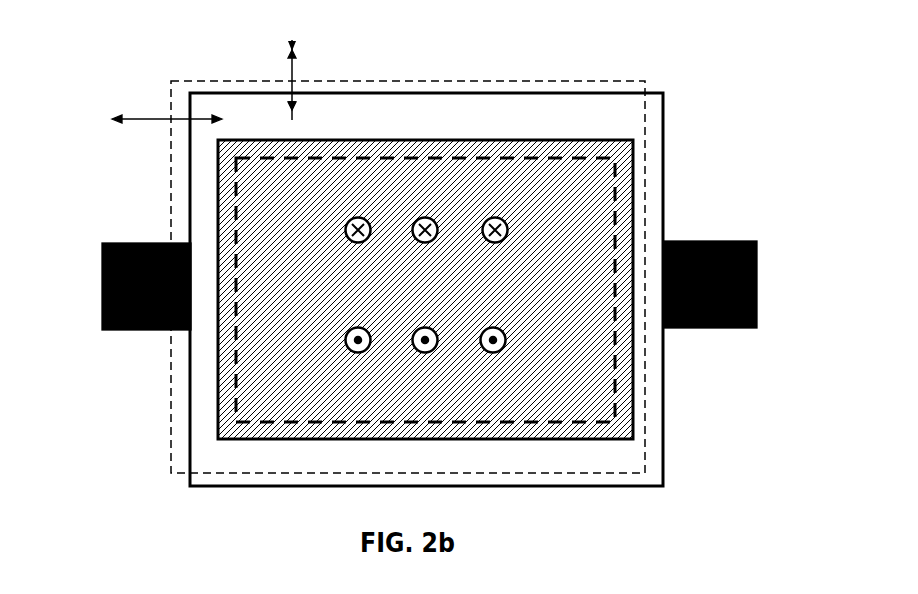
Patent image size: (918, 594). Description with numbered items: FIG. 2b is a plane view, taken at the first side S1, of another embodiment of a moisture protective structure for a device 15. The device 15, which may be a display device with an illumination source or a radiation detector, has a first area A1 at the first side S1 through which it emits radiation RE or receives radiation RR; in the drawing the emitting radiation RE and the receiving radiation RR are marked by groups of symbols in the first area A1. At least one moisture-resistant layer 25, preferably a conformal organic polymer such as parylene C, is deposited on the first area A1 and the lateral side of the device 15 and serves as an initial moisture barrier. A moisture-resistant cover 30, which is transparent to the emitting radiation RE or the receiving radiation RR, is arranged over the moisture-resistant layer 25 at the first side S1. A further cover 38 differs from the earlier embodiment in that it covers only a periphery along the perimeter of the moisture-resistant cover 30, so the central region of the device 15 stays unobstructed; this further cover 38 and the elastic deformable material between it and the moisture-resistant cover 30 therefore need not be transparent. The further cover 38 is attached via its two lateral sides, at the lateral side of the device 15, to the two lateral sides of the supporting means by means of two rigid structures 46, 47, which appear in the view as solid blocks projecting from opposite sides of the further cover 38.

The moisture-resistant cover 30 is at (164, 104).
The further cover 38 is at (663, 93).
The moisture-resistant layer 25 is at (625, 178).
The device 15 is at (595, 398).
The rigid structure 46 is at (102, 307).
The rigid structure 47 is at (757, 284).
The first side S1 is at (137, 203).
The receiving radiation RR is at (477, 213).
The first area A1 is at (426, 292).
The emitting radiation RE is at (482, 358).